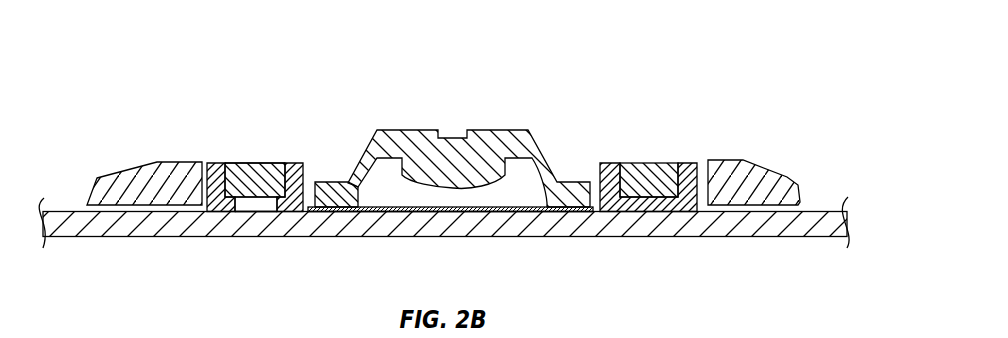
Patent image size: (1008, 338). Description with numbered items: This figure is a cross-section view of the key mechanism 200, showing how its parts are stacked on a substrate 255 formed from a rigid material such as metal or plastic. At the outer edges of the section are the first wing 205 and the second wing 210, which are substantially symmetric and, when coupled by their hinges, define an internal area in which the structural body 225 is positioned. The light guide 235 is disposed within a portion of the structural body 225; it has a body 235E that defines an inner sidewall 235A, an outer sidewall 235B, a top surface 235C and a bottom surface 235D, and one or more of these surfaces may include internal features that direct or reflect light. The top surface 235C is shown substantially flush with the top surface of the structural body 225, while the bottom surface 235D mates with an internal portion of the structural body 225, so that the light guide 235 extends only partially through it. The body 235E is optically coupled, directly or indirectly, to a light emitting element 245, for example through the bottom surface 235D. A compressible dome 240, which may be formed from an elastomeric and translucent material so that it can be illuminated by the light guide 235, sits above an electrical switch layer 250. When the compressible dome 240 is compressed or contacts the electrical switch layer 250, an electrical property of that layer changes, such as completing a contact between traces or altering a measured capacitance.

The key mechanism 200 is at (150, 47).
The first wing 205 is at (100, 173).
The second wing 210 is at (772, 170).
The structural body 225 is at (292, 212).
The light guide 235 is at (248, 163).
The inner sidewall 235A is at (297, 164).
The outer sidewall 235B is at (207, 182).
The top surface 235C is at (278, 163).
The bottom surface 235D is at (250, 212).
The body 235E is at (235, 163).
The compressible dome 240 is at (410, 130).
The light emitting element 245 is at (260, 212).
The electrical switch layer 250 is at (508, 212).
The substrate 255 is at (567, 237).